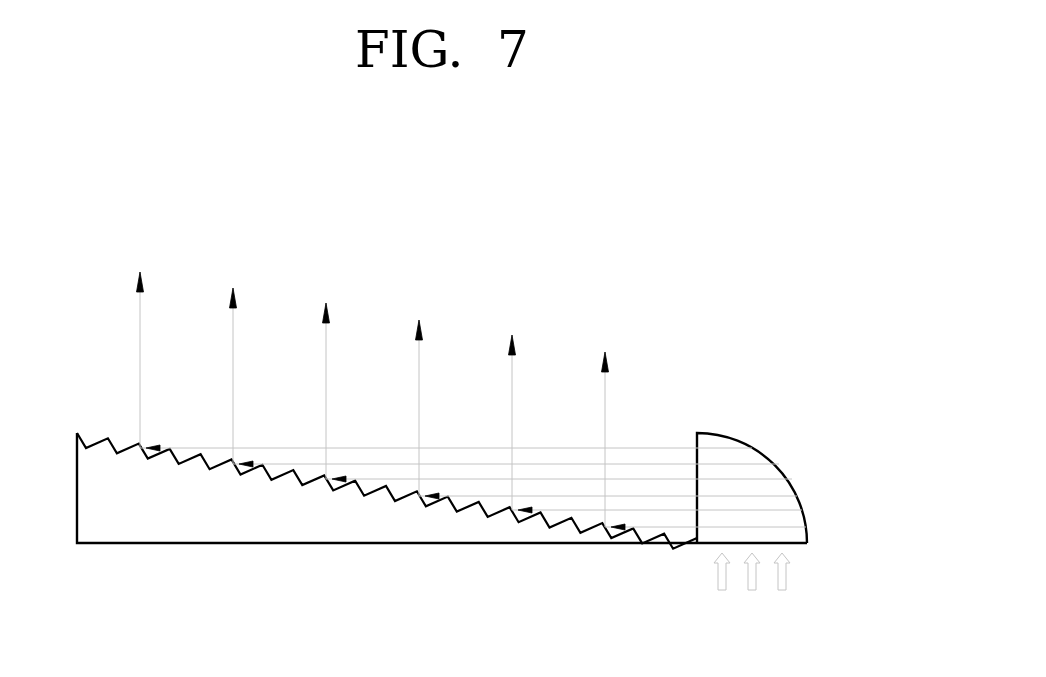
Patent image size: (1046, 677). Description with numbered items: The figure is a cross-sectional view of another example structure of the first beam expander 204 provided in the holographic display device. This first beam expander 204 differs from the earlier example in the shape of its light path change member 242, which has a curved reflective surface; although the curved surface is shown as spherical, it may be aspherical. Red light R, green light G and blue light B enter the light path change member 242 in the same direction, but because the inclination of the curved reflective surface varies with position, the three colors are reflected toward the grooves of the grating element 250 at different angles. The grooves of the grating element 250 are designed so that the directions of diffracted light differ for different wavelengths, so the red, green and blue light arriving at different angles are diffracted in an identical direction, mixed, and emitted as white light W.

The first beam expander 204 is at (698, 305).
The light path change member 242 is at (763, 452).
The grating element 250 is at (205, 532).